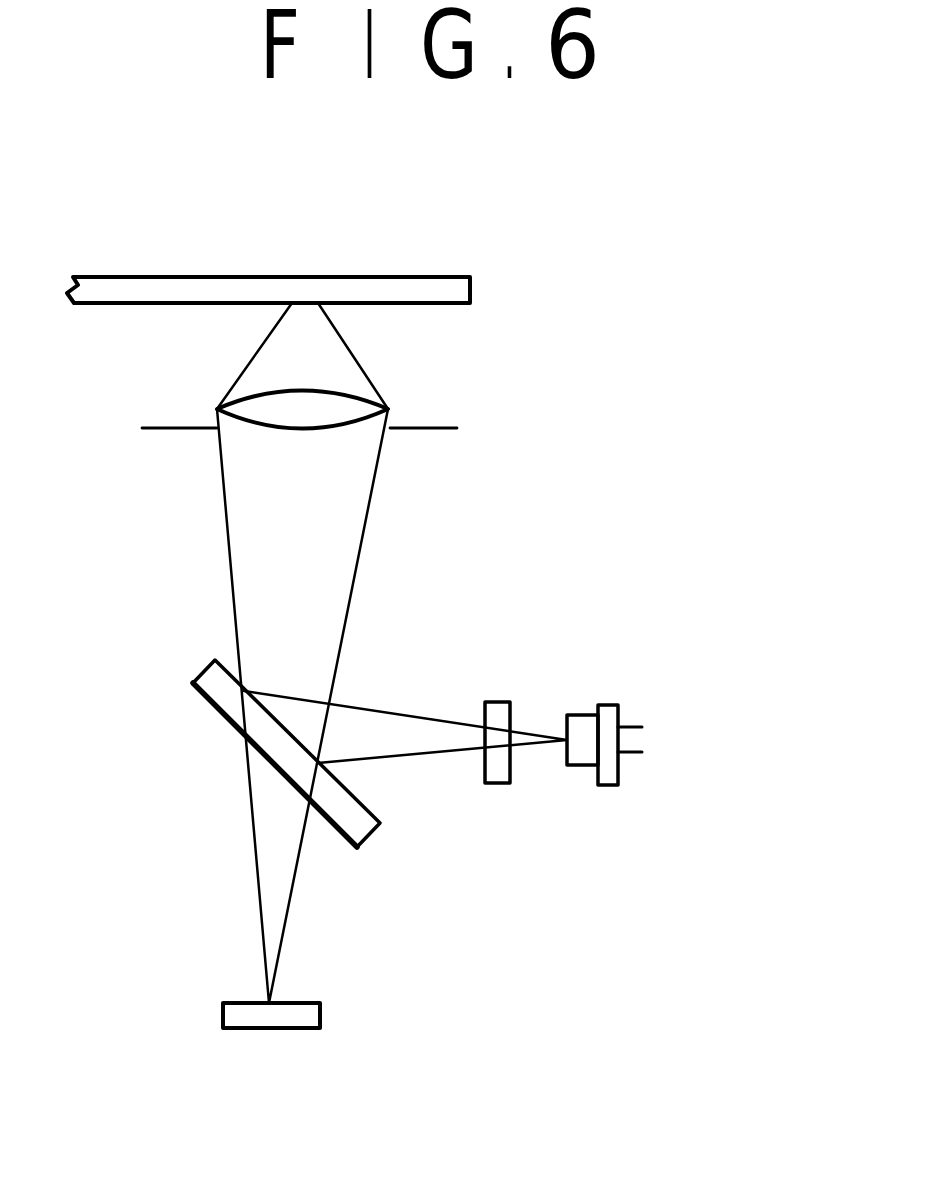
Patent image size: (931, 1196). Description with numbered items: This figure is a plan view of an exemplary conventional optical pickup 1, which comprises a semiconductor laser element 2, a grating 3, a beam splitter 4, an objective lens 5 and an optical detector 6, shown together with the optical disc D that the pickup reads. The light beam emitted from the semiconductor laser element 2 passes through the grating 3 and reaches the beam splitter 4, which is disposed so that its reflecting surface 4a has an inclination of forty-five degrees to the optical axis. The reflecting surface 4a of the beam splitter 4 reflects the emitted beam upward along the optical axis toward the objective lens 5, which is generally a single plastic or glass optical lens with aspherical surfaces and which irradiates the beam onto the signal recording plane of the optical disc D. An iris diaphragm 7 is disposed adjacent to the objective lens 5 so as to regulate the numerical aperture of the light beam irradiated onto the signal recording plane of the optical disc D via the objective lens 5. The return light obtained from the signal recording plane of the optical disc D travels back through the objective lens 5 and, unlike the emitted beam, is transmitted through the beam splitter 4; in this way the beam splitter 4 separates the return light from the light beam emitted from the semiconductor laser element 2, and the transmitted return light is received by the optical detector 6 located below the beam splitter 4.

The optical pickup 1 is at (644, 370).
The semiconductor laser element 2 is at (585, 767).
The grating 3 is at (499, 702).
The beam splitter 4 is at (338, 837).
The reflecting surface 4a is at (360, 802).
The objective lens 5 is at (388, 409).
The optical detector 6 is at (269, 1030).
The iris diaphragm 7 is at (158, 430).
The optical disc D is at (328, 277).